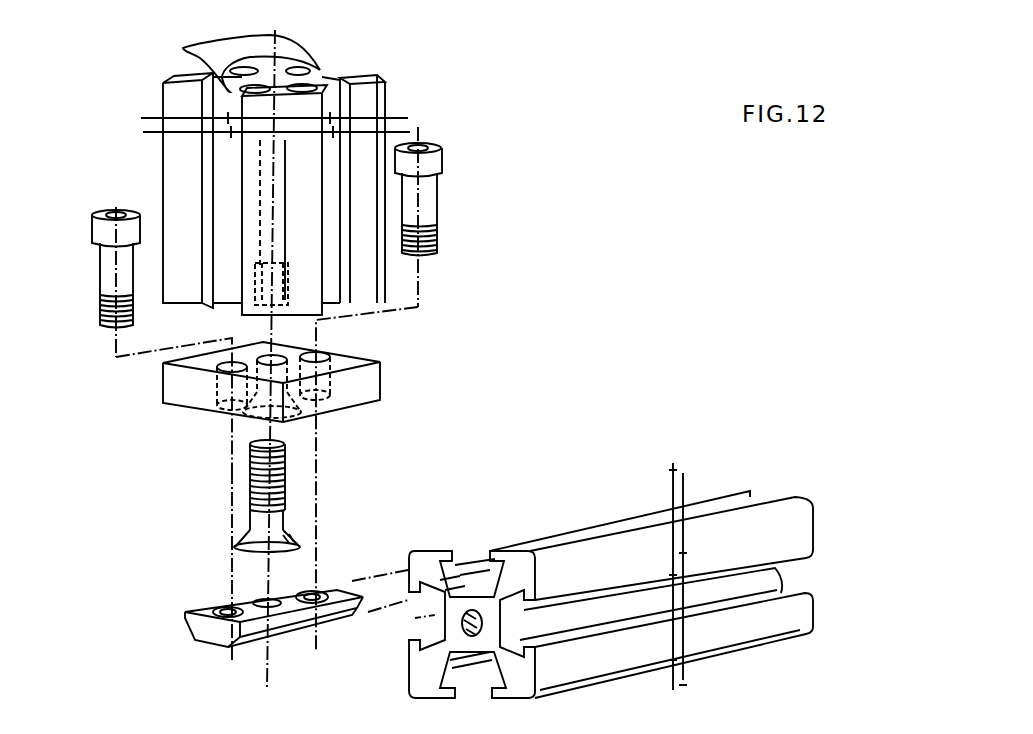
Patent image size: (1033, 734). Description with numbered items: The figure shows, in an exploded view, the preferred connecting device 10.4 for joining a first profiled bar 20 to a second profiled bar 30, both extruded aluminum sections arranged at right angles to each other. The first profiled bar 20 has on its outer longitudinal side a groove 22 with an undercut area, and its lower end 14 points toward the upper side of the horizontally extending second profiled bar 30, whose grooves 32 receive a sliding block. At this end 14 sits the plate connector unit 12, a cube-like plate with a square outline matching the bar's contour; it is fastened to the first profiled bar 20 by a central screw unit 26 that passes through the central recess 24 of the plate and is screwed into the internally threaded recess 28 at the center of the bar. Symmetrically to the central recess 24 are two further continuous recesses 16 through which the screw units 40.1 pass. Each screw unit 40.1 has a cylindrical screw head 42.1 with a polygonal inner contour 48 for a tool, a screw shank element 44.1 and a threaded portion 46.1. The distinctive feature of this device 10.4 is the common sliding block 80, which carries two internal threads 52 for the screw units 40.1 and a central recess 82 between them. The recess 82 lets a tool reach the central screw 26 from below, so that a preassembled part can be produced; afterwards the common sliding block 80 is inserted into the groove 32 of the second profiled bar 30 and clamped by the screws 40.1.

The connecting device 10.4 is at (522, 408).
The plate connector unit 12 is at (360, 387).
The lower end 14 is at (402, 318).
The continuous recesses 16 is at (223, 375).
The first profiled bar 20 is at (392, 102).
The groove 22 is at (205, 58).
The central recess 24 is at (250, 398).
The central screw unit 26 is at (287, 468).
The central recess with internal thread 28 is at (253, 287).
The second profiled bar 30 is at (605, 505).
The grooves 32 is at (514, 620).
The screw units 40.1 is at (97, 262).
The cylindrical screw head 42.1 is at (92, 230).
The screw shank element 44.1 is at (105, 275).
The threaded portion 46.1 is at (100, 318).
The polygonal inner contour 48 is at (114, 214).
The internal threads 52 is at (217, 607).
The common sliding block 80 is at (207, 637).
The central recess 82 is at (260, 598).